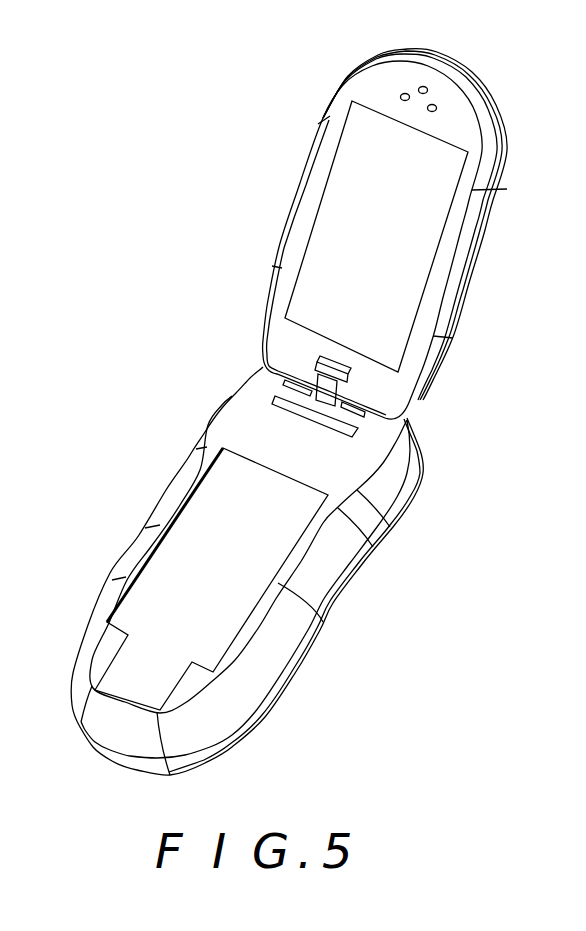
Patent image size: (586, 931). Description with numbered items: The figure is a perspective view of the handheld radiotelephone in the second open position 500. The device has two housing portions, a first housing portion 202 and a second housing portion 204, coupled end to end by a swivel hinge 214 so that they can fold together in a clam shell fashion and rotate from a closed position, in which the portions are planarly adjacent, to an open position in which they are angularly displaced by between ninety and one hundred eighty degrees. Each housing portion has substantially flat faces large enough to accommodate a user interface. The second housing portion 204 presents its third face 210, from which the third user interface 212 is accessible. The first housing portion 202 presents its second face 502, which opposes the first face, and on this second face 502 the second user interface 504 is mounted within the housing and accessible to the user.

The second open position 500 is at (495, 91).
The second housing portion 204 is at (505, 134).
The third face 210 is at (371, 83).
The third user interface 212 is at (340, 203).
The swivel hinge 214 is at (288, 397).
The first housing portion 202 is at (270, 712).
The second face 502 is at (108, 642).
The second user interface 504 is at (203, 503).